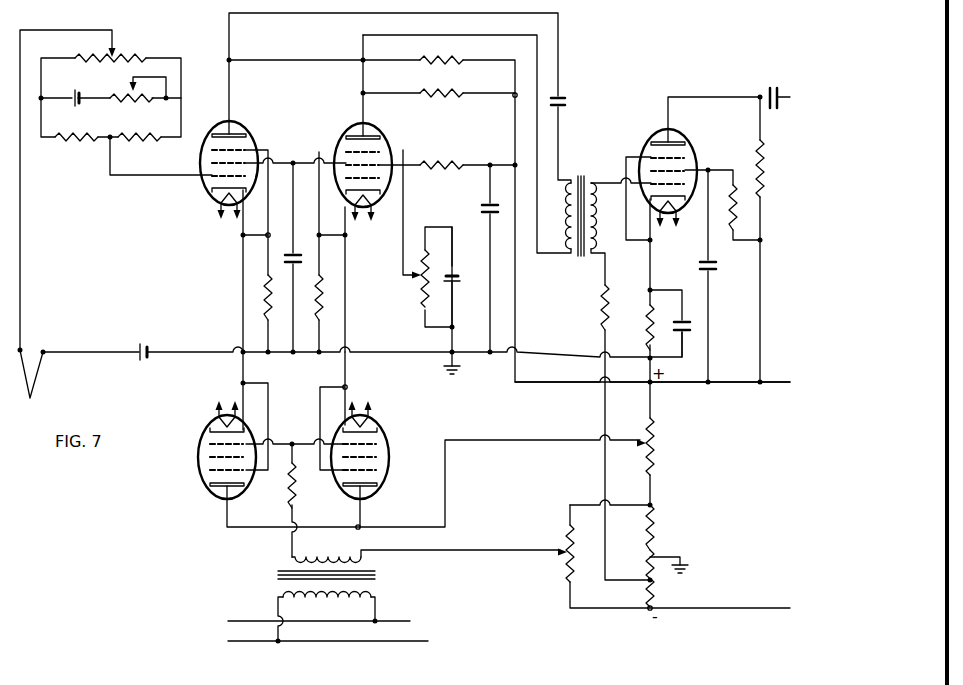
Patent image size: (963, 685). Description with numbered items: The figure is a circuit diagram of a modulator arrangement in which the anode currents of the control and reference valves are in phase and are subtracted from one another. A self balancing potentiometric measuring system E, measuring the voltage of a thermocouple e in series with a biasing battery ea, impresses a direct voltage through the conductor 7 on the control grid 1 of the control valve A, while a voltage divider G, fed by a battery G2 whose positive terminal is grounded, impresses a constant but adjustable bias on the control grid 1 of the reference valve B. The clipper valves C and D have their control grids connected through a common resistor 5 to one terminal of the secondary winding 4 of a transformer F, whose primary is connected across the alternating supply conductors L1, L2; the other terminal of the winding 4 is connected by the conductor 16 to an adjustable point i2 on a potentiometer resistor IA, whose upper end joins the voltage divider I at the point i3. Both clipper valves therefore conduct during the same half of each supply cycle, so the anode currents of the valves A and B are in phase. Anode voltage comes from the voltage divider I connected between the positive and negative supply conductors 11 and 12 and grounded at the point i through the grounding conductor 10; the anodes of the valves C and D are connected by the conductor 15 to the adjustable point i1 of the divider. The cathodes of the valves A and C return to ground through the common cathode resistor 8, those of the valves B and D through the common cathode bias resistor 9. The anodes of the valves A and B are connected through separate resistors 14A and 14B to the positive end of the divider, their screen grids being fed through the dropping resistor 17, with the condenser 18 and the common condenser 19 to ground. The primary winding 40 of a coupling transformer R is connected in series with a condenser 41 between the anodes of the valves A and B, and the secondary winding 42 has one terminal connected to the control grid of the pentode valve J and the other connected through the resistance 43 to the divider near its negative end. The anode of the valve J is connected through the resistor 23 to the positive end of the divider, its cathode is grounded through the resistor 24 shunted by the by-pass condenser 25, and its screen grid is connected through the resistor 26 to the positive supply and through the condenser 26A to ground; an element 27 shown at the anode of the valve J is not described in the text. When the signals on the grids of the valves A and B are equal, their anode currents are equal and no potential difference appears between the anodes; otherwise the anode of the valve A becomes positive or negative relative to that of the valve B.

The self balancing potentiometric measuring system E is at (176, 52).
The conductor 7 is at (151, 174).
The control valve A is at (242, 115).
The reference valve B is at (340, 118).
The control grid 1 is at (240, 176).
The pentode valve J is at (654, 115).
The clipping tube C is at (197, 423).
The clipping tube D is at (398, 427).
The resistor 14A is at (465, 60).
The resistor 14B is at (465, 92).
The dropping resistor 17 is at (429, 164).
The condenser 41 is at (566, 98).
The coupling transformer R is at (590, 170).
The primary winding 40 is at (554, 216).
The secondary winding 42 is at (604, 216).
The common condenser 19 is at (297, 257).
The common cathode resistor 8 is at (272, 308).
The common cathode bias resistor 9 is at (320, 312).
The voltage divider G is at (443, 224).
The condenser 18 is at (487, 216).
The battery G2 is at (457, 277).
The grounding conductor 10 is at (462, 367).
The output capacitor 27 is at (770, 90).
The resistor 23 is at (756, 160).
The resistor 26 is at (733, 236).
The condenser 26A is at (710, 274).
The resistance 43 is at (603, 320).
The by-pass condenser 25 is at (682, 318).
The resistor 24 is at (648, 313).
The positive supply conductor 11 is at (677, 386).
The biasing battery ea is at (139, 347).
The thermocouple e is at (37, 373).
The voltage divider I is at (664, 447).
The adjustable point i1 is at (644, 441).
The conductor 15 is at (390, 532).
The point i3 is at (652, 505).
The grounded point i is at (650, 558).
The potentiometer resistor IA is at (548, 528).
The adjustable point i2 is at (564, 556).
The conductor 16 is at (476, 553).
The resistor 5 is at (296, 493).
The secondary winding 4 is at (318, 561).
The transformer F is at (262, 575).
The alternating supply conductor L1 is at (413, 621).
The alternating supply conductor L2 is at (418, 644).
The negative supply conductor 12 is at (700, 608).